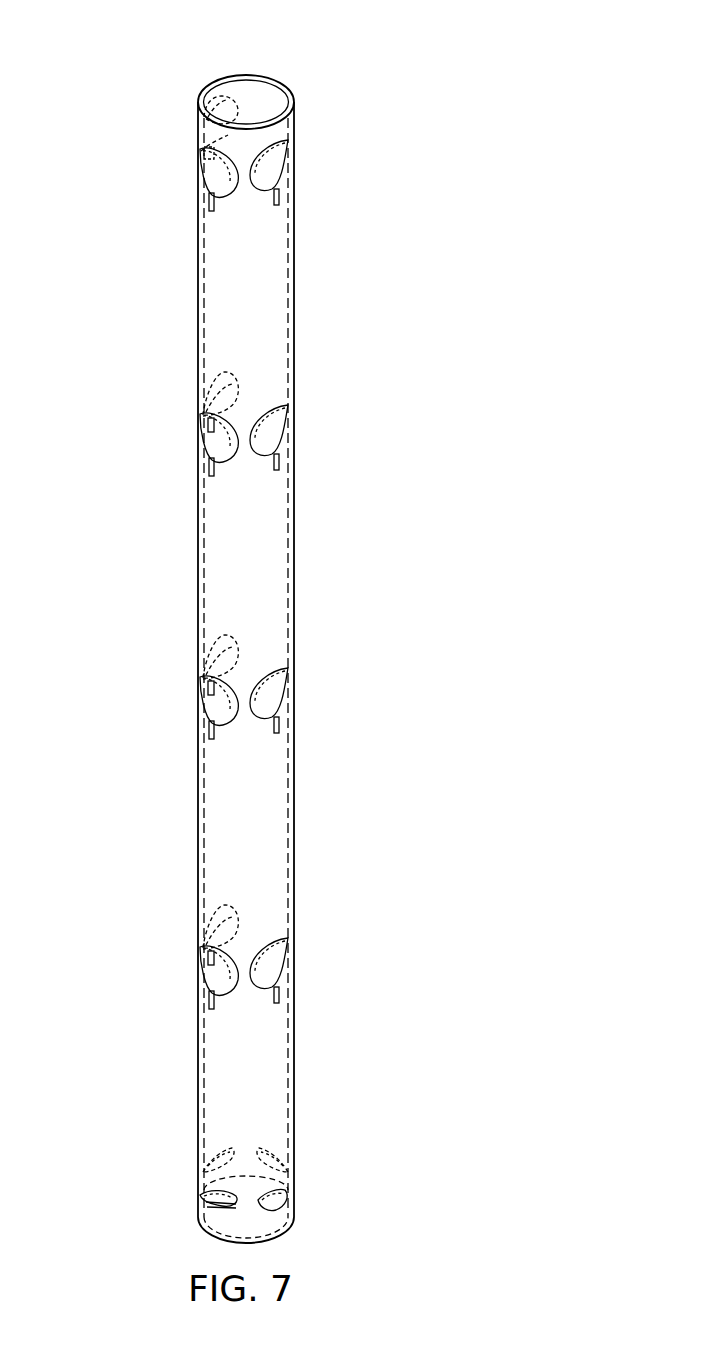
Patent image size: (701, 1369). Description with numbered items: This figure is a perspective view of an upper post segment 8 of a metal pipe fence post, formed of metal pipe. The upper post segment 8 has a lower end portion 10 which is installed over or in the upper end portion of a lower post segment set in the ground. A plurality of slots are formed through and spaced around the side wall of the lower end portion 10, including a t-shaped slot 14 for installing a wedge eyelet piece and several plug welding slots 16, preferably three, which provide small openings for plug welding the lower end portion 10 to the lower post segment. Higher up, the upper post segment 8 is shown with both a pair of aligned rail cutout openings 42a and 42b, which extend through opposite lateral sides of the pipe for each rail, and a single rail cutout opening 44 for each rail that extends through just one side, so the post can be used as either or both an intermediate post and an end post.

The upper post segment 8 is at (158, 525).
The lower end portion 10 is at (197, 1138).
The t-shaped slot 14 is at (198, 1218).
The plug welding slots 16 is at (215, 1142).
The rail cutout opening 42a is at (240, 92).
The rail cutout opening 42b is at (306, 194).
The single rail cutout opening 44 is at (190, 196).